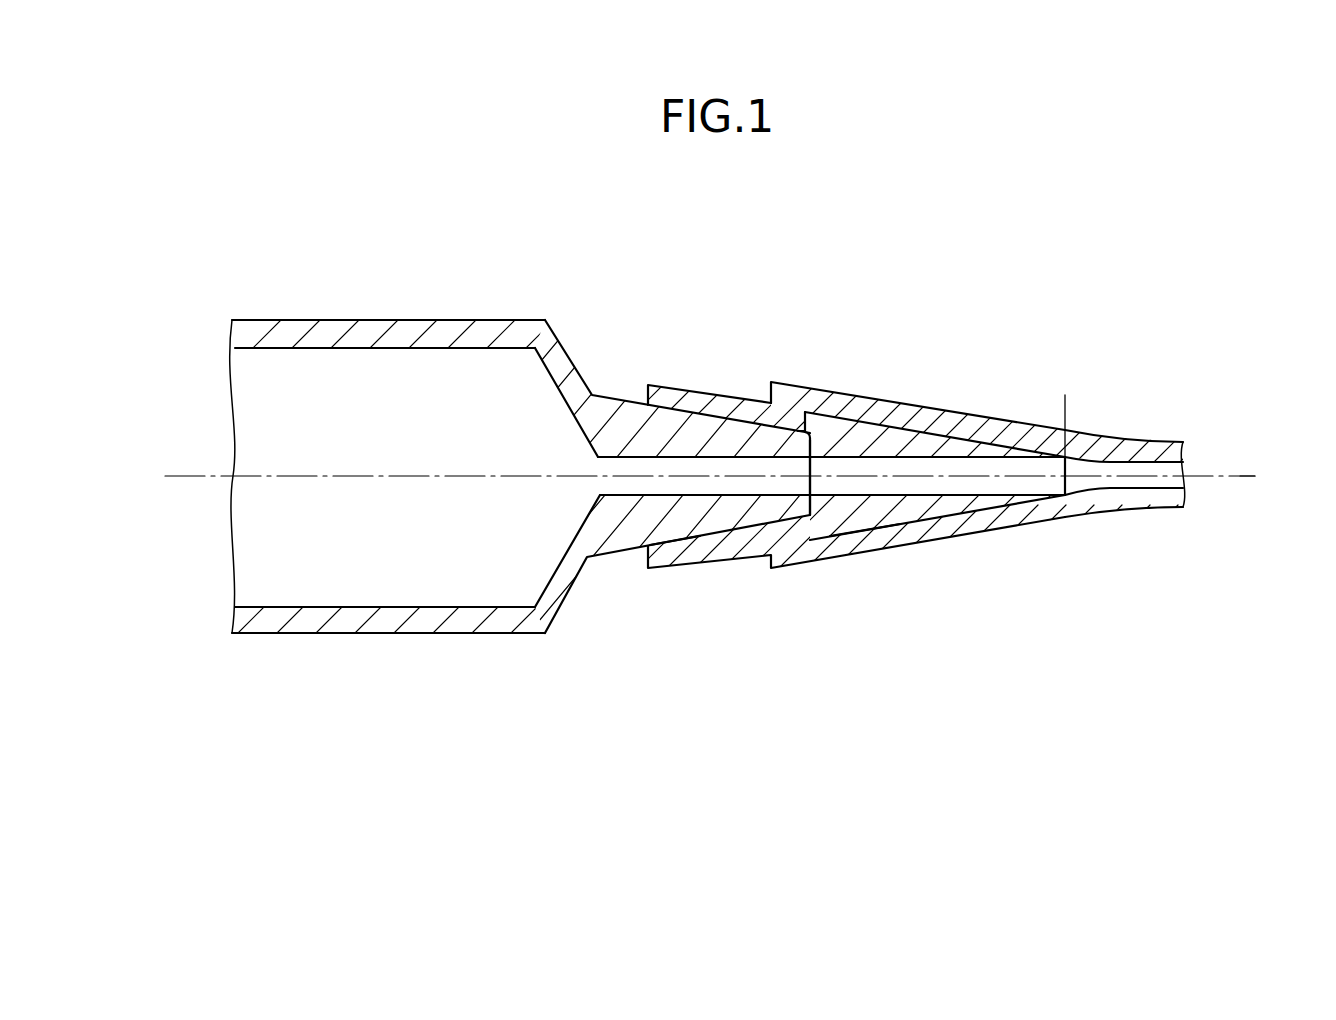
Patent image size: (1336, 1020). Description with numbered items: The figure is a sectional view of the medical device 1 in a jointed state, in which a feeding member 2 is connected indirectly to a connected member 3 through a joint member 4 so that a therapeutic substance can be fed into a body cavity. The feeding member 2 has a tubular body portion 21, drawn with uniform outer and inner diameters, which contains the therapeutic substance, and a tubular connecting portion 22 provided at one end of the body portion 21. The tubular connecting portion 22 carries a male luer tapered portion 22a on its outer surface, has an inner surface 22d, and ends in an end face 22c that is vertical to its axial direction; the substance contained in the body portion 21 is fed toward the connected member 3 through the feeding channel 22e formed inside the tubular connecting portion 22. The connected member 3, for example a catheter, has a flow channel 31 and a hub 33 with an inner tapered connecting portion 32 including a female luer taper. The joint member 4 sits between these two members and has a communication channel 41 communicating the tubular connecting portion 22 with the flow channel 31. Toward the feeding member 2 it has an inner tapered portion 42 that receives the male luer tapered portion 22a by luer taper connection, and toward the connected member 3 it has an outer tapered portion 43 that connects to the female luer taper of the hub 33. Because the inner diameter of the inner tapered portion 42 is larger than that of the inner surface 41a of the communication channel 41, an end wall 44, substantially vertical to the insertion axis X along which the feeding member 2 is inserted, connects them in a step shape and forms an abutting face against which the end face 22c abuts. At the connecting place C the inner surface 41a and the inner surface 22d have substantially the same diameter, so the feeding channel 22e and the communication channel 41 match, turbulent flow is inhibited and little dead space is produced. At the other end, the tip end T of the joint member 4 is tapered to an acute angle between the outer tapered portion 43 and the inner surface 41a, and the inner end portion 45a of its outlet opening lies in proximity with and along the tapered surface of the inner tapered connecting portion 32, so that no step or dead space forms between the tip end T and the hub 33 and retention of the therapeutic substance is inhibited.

The medical device 1 is at (1015, 292).
The feeding member 2 is at (480, 312).
The tubular body portion 21 is at (288, 338).
The tubular connecting portion 22 is at (623, 545).
The male luer tapered portion 22a is at (667, 545).
The end face 22c is at (810, 503).
The inner surface 22d is at (795, 487).
The feeding channel 22e is at (628, 485).
The connected member 3 is at (1090, 427).
The flow channel 31 is at (1160, 482).
The inner tapered connecting portion 32 is at (918, 512).
The hub 33 is at (895, 535).
The joint member 4 is at (690, 382).
The communication channel 41 is at (927, 483).
The inner surface of the communication channel 41a is at (825, 487).
The inner tapered portion 42 is at (738, 420).
The outer tapered portion 43 is at (922, 423).
The end wall 44 is at (800, 430).
The inner end portion 45a is at (1065, 490).
The insertion axis X is at (176, 474).
The connecting place C is at (832, 428).
The tip end T is at (1065, 395).